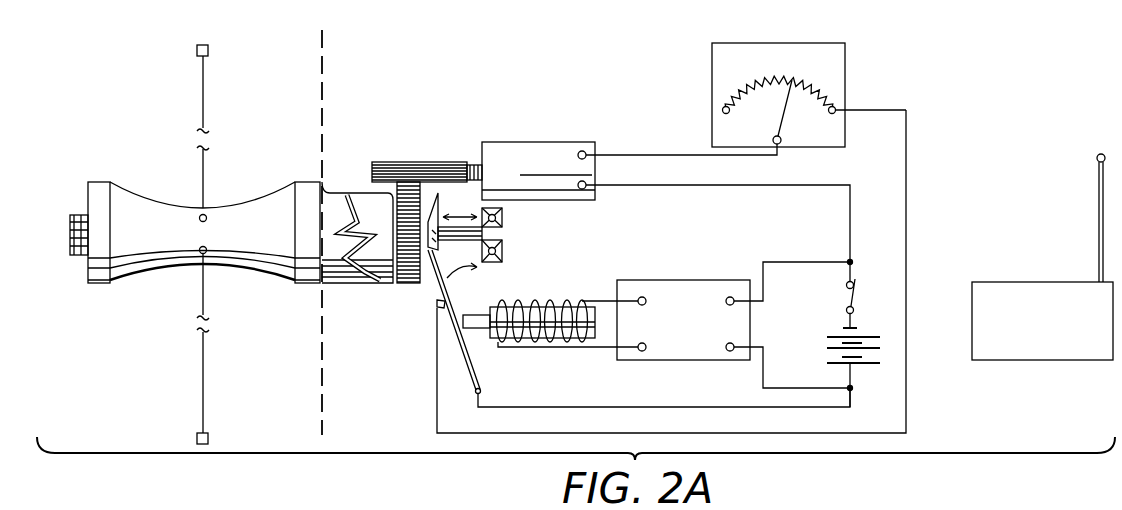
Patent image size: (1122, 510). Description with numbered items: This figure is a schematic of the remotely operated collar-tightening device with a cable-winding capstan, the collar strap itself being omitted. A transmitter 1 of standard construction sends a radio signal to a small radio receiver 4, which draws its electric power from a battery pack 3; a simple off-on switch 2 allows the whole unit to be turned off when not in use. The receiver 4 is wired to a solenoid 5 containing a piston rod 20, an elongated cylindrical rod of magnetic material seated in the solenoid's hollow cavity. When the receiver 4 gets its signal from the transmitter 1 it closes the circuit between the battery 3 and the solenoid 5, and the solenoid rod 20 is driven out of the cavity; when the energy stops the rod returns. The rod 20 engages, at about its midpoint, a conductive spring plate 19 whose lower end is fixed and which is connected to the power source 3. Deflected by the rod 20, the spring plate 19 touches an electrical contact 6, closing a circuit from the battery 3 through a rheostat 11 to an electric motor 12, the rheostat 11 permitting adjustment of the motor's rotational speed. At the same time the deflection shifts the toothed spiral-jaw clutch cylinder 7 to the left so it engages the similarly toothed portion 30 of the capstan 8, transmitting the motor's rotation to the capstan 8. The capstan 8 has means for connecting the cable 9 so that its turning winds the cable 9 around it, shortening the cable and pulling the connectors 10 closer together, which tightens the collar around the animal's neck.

The transmitter 1 is at (1026, 282).
The off-on switch 2 is at (848, 300).
The battery pack 3 is at (863, 367).
The radio receiver 4 is at (695, 279).
The solenoid 5 is at (537, 318).
The electrical contact 6 is at (436, 304).
The spiral-jaw clutch cylinder 7 is at (393, 278).
The capstan 8 is at (292, 285).
The cable 9 is at (203, 410).
The connectors 10 is at (210, 440).
The rheostat 11 is at (848, 75).
The electric motor 12 is at (545, 140).
The spring plate 19 is at (483, 374).
The solenoid rod 20 is at (475, 305).
The toothed portion of capstan 30 is at (333, 202).